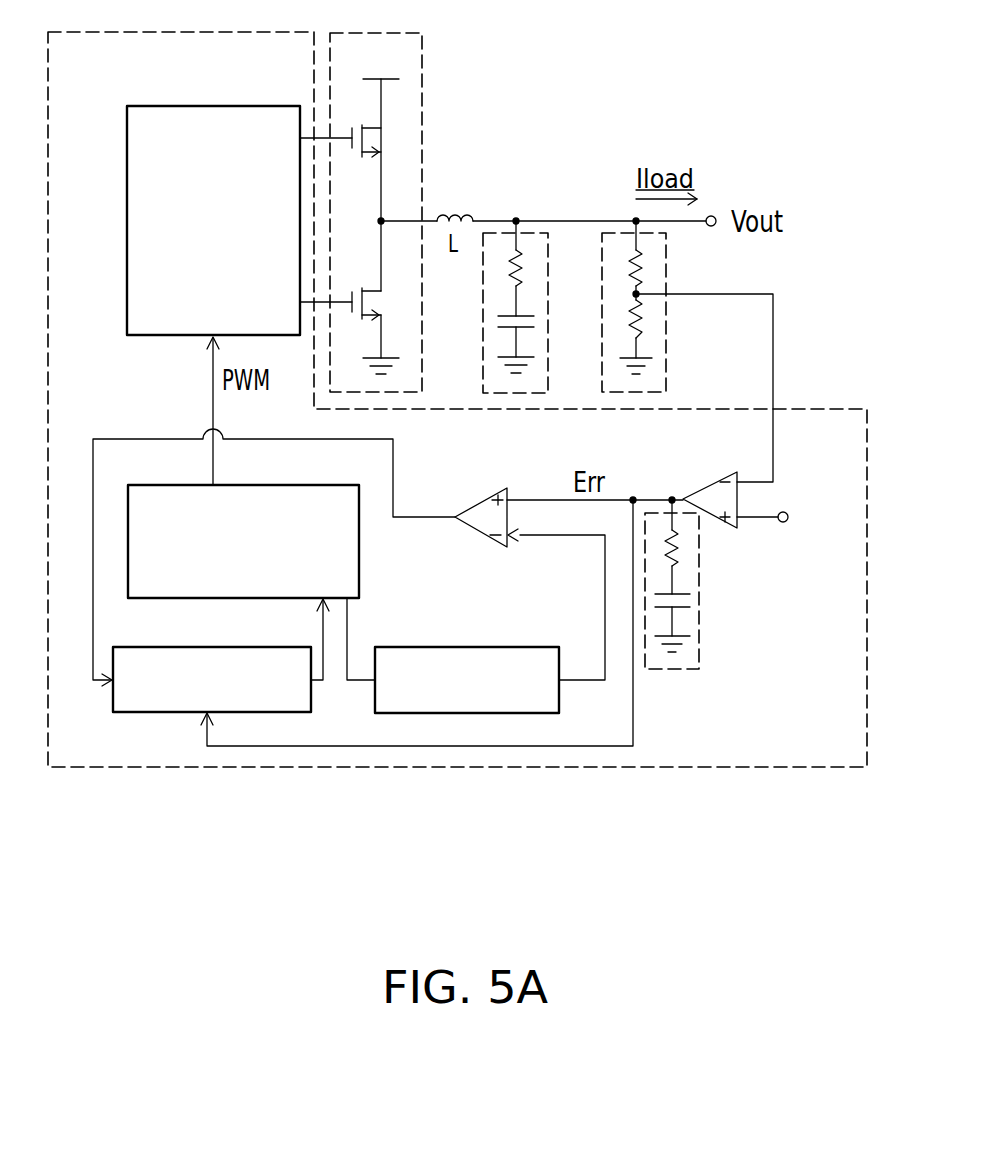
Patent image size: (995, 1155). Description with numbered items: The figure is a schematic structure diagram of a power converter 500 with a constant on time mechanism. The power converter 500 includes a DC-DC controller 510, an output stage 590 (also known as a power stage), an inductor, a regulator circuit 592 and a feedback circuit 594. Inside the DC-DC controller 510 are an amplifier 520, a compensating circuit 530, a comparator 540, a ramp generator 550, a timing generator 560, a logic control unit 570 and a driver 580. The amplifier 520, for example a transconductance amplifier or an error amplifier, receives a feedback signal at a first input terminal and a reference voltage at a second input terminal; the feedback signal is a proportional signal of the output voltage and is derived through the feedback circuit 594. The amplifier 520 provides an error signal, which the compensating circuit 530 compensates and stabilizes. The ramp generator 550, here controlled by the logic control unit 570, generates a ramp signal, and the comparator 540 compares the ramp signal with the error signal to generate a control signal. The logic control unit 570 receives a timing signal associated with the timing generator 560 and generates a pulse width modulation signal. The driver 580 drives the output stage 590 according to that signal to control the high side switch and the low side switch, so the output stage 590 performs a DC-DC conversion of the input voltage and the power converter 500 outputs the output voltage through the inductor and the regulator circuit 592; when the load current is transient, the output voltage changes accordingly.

The power converter 500 is at (822, 916).
The DC-DC controller 510 is at (838, 408).
The amplifier 520 is at (700, 488).
The compensating circuit 530 is at (699, 618).
The comparator 540 is at (478, 498).
The ramp generator 550 is at (458, 647).
The timing generator 560 is at (298, 712).
The logic control unit 570 is at (275, 485).
The driver 580 is at (207, 106).
The output stage 590 is at (422, 80).
The regulator circuit 592 is at (538, 229).
The feedback circuit 594 is at (666, 348).